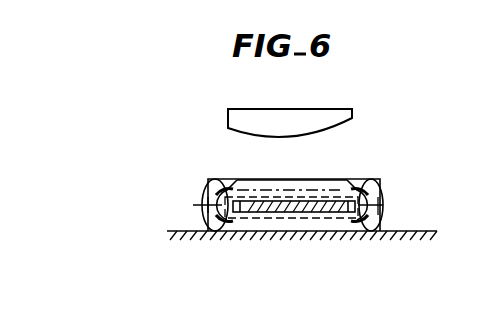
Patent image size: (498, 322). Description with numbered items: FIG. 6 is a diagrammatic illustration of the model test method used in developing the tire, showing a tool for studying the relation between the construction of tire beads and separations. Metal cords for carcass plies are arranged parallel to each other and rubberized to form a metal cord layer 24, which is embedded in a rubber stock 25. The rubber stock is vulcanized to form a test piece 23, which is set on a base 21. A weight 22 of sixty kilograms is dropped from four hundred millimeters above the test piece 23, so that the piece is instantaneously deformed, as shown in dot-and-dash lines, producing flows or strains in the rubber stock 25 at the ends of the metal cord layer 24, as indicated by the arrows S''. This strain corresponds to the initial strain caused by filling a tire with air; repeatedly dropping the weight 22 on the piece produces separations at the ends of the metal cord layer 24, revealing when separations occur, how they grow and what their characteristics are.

The base 21 is at (383, 232).
The weight 22 is at (352, 118).
The test piece 23 is at (372, 176).
The metal cord layer 24 is at (301, 212).
The rubber stock 25 is at (383, 205).
The arrows S'' is at (177, 200).